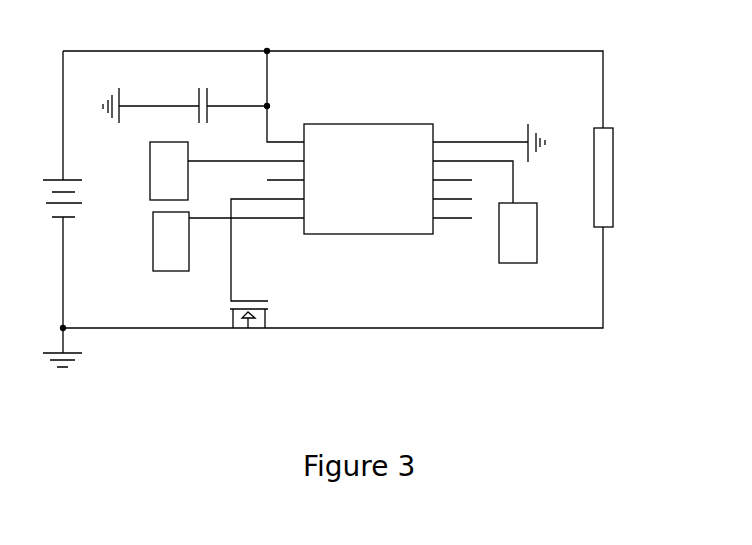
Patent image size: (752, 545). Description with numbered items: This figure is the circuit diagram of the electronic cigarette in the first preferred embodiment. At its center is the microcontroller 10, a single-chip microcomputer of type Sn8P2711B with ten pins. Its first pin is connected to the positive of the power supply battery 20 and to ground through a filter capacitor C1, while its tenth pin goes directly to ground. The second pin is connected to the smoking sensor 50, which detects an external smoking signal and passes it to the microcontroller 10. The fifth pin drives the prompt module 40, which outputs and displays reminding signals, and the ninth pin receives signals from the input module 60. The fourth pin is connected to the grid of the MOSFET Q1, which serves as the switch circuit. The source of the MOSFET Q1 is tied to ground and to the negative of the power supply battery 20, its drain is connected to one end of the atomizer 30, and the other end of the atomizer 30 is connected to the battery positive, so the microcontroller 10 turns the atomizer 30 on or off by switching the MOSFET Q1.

The microcontroller 10 is at (383, 234).
The power supply battery 20 is at (76, 198).
The atomizer 30 is at (613, 174).
The prompt module 40 is at (228, 241).
The smoking sensor 50 is at (227, 171).
The input module 60 is at (485, 212).
The filter capacitor C1 is at (185, 98).
The MOSFET Q1 is at (267, 280).